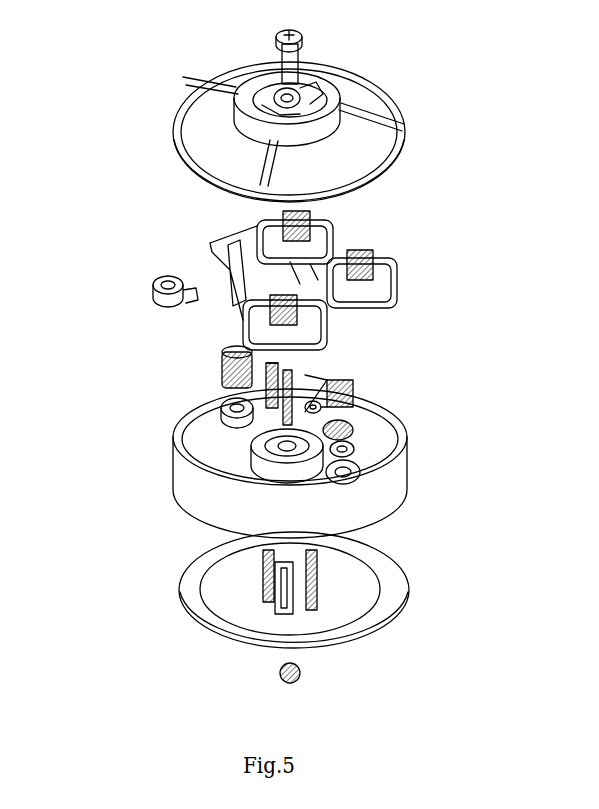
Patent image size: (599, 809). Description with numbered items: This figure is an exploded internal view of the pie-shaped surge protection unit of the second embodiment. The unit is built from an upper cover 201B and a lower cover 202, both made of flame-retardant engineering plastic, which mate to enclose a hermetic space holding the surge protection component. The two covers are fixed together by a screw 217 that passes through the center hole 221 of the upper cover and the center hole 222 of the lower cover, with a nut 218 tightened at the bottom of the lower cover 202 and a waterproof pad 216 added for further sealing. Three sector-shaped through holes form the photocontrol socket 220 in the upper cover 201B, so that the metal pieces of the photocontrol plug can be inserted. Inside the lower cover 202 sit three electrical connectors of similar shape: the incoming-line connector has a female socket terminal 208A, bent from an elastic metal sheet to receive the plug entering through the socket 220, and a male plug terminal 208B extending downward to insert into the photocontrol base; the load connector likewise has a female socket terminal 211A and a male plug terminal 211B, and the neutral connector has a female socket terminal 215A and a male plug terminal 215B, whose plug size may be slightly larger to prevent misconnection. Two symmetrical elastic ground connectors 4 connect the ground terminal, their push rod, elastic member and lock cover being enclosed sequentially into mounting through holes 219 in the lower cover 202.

The elastic ground connector 4 is at (222, 380).
The upper cover 201B is at (377, 128).
The lower cover 202 is at (382, 500).
The female socket terminal of connector of incoming line terminal L 208A is at (320, 393).
The male plug terminal of connector of incoming line terminal L 208B is at (312, 598).
The female socket terminal of connector of load terminal L 211A is at (222, 400).
The male plug terminal of connector of load terminal L 211B is at (278, 597).
The female socket terminal of connector of neutral line terminal N 215A is at (292, 372).
The male plug terminal of connector of neutral line terminal N 215B is at (268, 568).
The waterproof pad 216 is at (362, 548).
The screw 217 is at (300, 66).
The nut 218 is at (300, 673).
The mounting through hole 219 is at (230, 420).
The photocontrol socket 220 is at (302, 102).
The center hole of upper cover 221 is at (280, 100).
The center hole of lower cover 222 is at (270, 448).